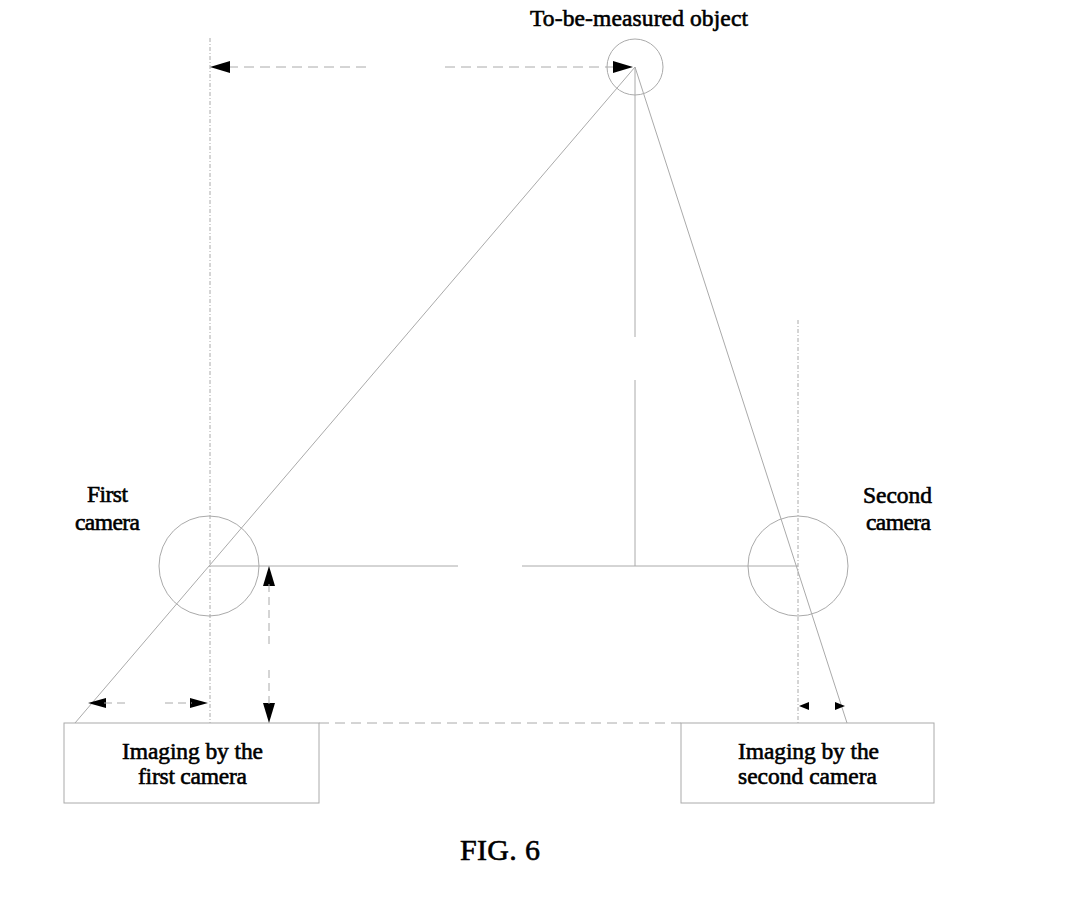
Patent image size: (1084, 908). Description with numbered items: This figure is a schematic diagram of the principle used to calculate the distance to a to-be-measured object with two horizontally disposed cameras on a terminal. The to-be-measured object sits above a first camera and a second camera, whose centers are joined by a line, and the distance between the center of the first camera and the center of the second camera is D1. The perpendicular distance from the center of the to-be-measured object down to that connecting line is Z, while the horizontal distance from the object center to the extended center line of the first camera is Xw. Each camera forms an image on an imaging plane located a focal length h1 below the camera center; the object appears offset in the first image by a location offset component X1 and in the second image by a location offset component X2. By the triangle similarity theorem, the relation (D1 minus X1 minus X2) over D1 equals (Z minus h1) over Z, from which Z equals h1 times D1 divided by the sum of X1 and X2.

The distance from center of to-be-measured object to line connecting camera centers Z is at (635, 316).
The distance between camera centers D1 is at (503, 564).
The distance from object center to extended center line of first camera Xw is at (421, 63).
The focal length h1 is at (309, 644).
The location offset component in first image X1 is at (148, 702).
The location offset component in second image X2 is at (822, 706).